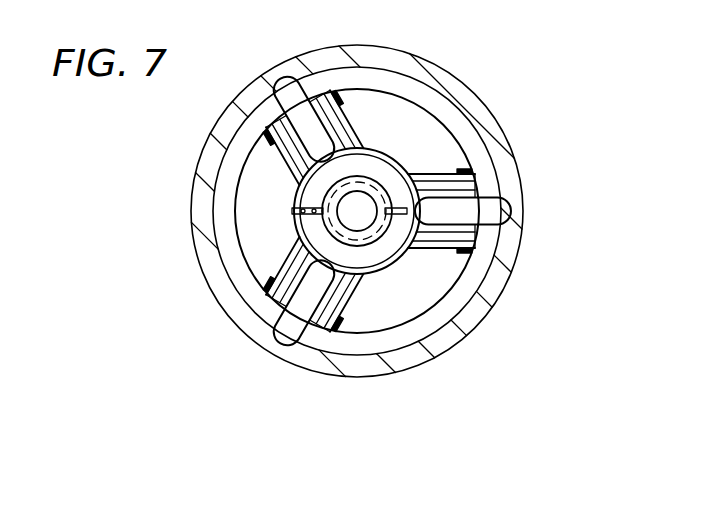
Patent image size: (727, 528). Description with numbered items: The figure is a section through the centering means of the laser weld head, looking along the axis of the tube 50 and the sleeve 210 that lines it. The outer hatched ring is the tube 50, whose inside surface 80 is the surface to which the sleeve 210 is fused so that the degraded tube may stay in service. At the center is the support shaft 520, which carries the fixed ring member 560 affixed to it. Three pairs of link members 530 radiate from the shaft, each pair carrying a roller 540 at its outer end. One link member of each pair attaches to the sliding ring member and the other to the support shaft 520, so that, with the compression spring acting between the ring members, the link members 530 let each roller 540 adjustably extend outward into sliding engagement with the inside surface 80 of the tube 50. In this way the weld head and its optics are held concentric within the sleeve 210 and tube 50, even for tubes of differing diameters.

The tube 50 is at (220, 272).
The inside surface of tube 80 is at (194, 221).
The sleeve 210 is at (455, 295).
The support shaft 520 is at (358, 247).
The link members 530 is at (463, 179).
The roller 540 is at (478, 213).
The fixed ring member 560 is at (393, 172).